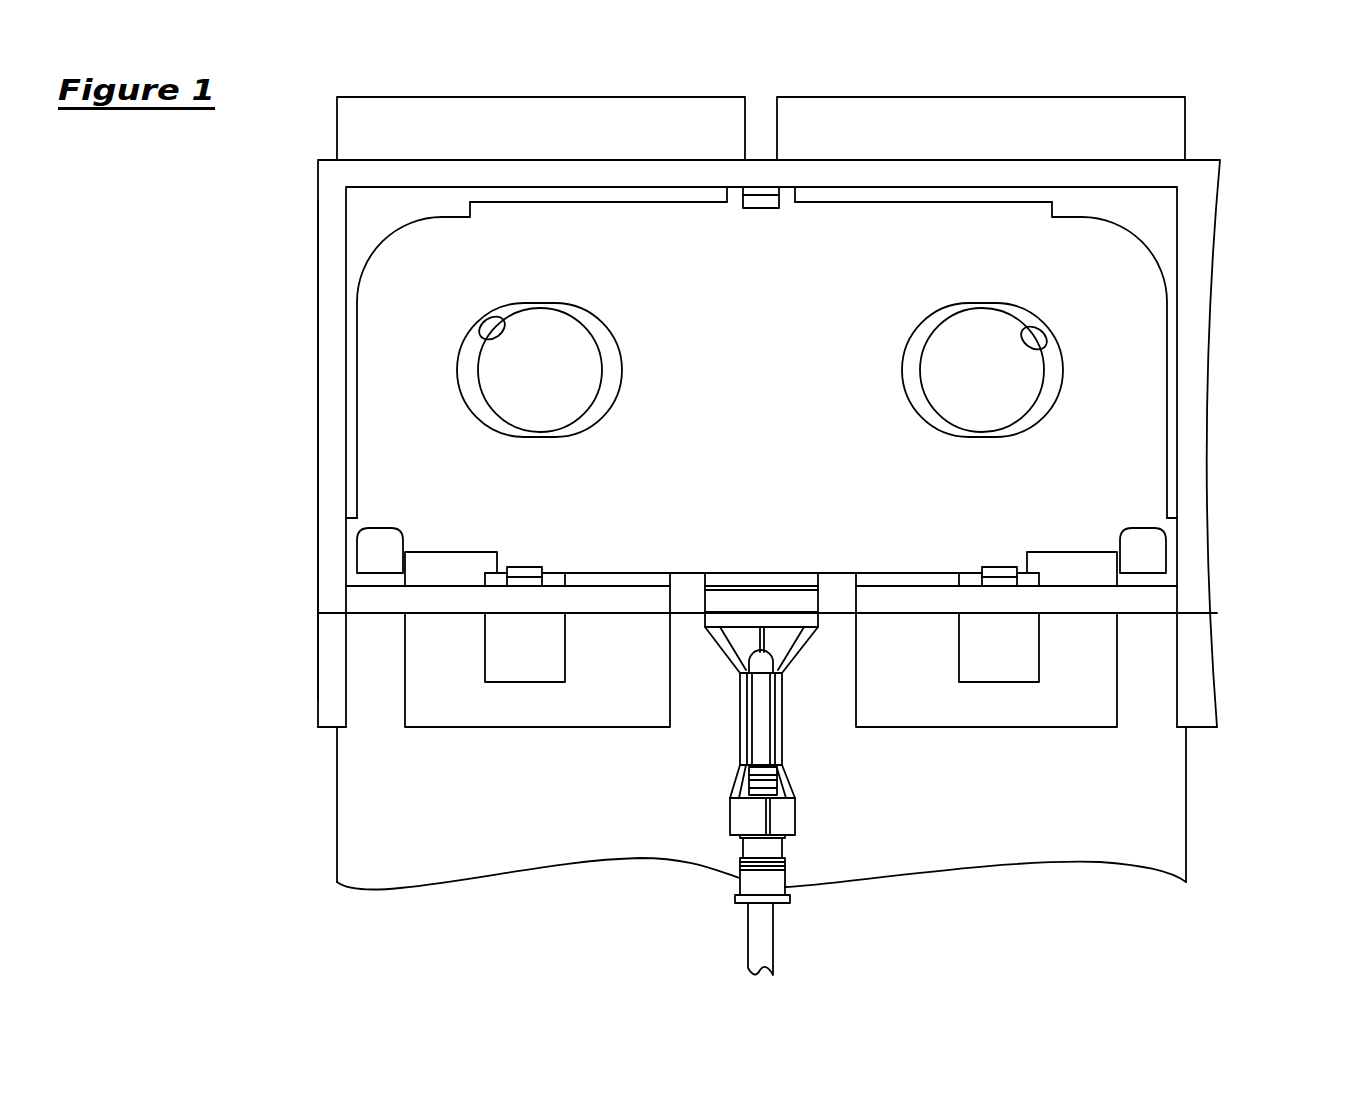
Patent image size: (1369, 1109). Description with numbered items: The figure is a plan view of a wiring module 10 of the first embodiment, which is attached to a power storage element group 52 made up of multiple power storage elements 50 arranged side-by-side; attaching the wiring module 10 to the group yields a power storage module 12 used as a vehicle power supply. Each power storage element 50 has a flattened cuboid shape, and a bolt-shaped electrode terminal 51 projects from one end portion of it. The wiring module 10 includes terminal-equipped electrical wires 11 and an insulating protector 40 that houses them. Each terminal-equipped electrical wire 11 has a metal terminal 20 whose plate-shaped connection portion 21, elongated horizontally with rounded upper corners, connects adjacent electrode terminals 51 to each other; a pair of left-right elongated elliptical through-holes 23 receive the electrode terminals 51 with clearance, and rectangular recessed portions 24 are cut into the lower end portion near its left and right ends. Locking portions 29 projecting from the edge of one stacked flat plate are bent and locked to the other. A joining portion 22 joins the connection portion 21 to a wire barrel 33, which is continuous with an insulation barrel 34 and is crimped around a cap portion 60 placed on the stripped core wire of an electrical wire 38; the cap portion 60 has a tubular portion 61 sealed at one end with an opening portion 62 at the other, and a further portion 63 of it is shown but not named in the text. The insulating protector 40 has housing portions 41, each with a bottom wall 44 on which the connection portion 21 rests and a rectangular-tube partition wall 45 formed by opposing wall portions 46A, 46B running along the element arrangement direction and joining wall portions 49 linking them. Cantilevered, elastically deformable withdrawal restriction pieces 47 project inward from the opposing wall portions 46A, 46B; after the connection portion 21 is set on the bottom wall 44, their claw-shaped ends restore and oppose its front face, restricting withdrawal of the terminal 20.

The wiring module 10 is at (1204, 180).
The terminal-equipped electrical wire 11 is at (712, 730).
The power storage module 12 is at (1226, 146).
The terminal 20 is at (1130, 343).
The connection portion 21 is at (1135, 305).
The joining portion 22 is at (722, 598).
The through-hole 23 is at (486, 320).
The recessed portion 24 is at (428, 553).
The locking portion 29 is at (363, 558).
The wire barrel 33 is at (778, 752).
The insulation barrel 34 is at (793, 815).
The electrical wire 38 is at (762, 945).
The insulating protector 40 is at (1190, 250).
The housing portion 41 is at (342, 271).
The bottom wall 44 is at (383, 215).
The partition wall 45 is at (330, 465).
The opposing wall portion 46A is at (447, 177).
The opposing wall portion 46B is at (377, 604).
The withdrawal restriction piece 47 is at (760, 200).
The joining wall portion 49 is at (330, 521).
The power storage element 50 is at (357, 852).
The electrode terminal 51 is at (525, 385).
The power storage element group 52 is at (318, 797).
The cap portion 60 is at (757, 843).
The tubular portion 61 is at (768, 848).
The opening portion 62 is at (770, 883).
The flange 63 is at (790, 903).